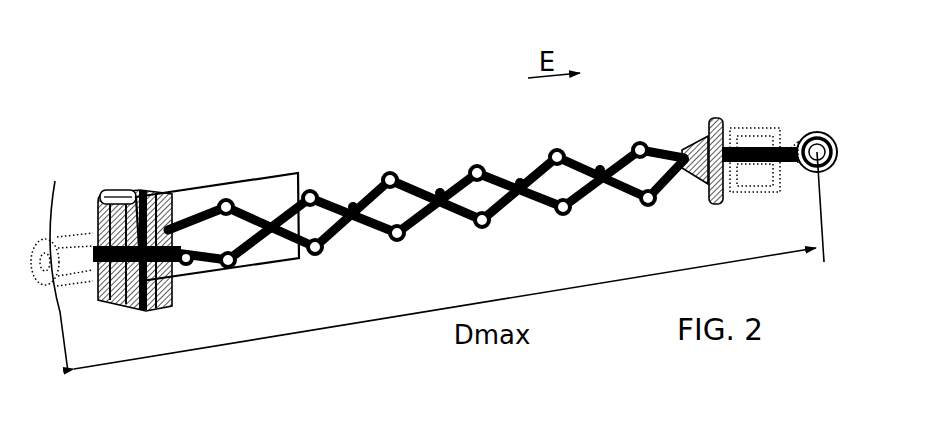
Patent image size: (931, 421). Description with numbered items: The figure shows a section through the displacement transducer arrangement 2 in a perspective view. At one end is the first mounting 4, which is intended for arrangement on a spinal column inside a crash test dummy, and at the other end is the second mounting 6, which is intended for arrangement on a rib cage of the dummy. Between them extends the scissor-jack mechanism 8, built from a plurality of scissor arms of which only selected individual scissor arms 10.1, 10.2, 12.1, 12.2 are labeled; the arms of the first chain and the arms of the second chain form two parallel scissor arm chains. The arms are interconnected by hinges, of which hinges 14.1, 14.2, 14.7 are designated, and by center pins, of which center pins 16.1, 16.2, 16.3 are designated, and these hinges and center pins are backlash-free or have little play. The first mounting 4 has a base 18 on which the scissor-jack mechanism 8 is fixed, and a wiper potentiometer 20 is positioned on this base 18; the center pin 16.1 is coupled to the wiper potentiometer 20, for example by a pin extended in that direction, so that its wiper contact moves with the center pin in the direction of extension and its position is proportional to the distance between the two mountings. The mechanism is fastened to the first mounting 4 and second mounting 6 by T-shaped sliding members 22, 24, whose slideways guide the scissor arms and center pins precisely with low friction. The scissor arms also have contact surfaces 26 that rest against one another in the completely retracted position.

The displacement transducer arrangement 2 is at (126, 58).
The first mounting 4 is at (62, 219).
The second mounting 6 is at (813, 140).
The scissor-jack mechanism 8 is at (441, 102).
The scissor arm 10.1 is at (172, 205).
The scissor arm 10.2 is at (260, 205).
The scissor arm 12.1 is at (207, 203).
The scissor arm 12.2 is at (298, 172).
The hinge 14.1 is at (209, 268).
The hinge 14.2 is at (233, 243).
The hinge 14.7 is at (477, 162).
The center pin 16.1 is at (182, 270).
The center pin 16.2 is at (260, 205).
The center pin 16.3 is at (348, 195).
The base 18 is at (120, 292).
The wiper potentiometer 20 is at (163, 200).
The sliding member 22 is at (140, 195).
The sliding member 24 is at (688, 143).
The contact surfaces 26 is at (348, 195).